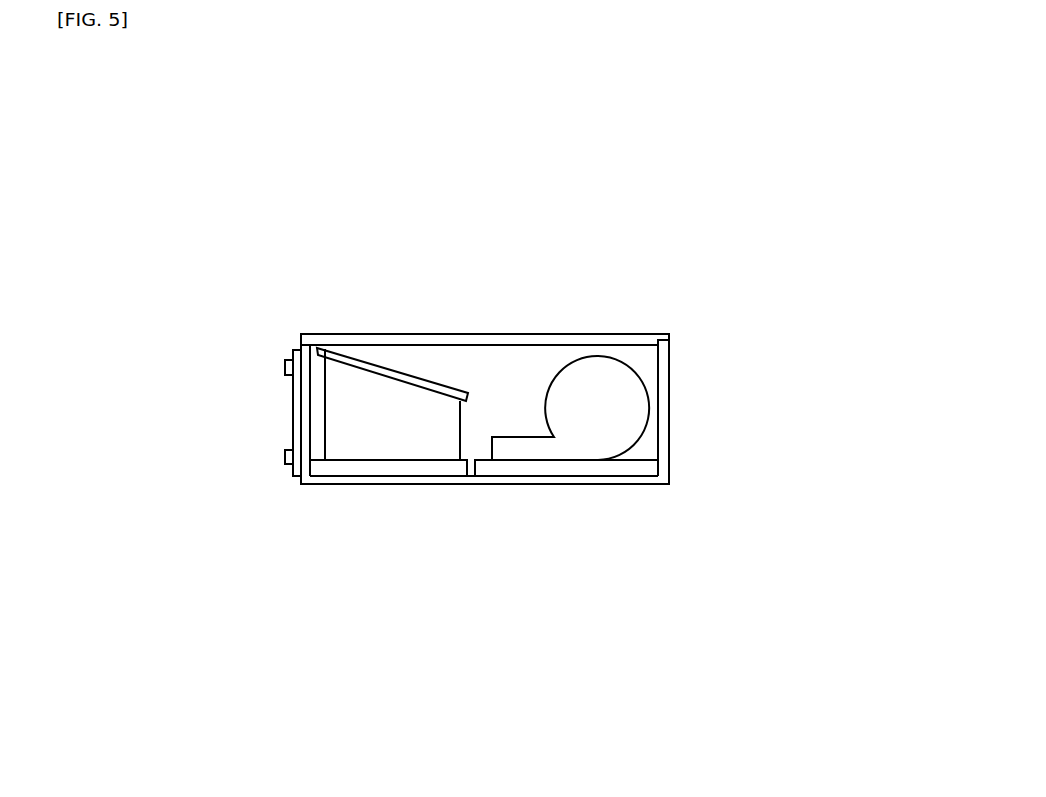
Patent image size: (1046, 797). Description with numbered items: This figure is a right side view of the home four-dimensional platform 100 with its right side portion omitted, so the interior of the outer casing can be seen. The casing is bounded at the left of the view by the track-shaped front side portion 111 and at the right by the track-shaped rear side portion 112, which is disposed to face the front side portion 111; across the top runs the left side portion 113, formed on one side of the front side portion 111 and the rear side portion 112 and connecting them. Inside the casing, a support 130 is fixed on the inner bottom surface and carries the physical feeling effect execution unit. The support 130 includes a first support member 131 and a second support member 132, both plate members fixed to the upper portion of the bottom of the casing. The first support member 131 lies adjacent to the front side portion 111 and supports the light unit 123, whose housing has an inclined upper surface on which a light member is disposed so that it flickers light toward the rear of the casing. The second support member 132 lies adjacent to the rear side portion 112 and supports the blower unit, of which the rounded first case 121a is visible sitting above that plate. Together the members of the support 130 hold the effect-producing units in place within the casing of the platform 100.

The home 4D platform 100 is at (130, 113).
The front side portion 111 is at (292, 417).
The rear side portion 112 is at (663, 374).
The left side portion 113 is at (507, 342).
The light unit 123 is at (387, 335).
The first case 121a is at (603, 380).
The support 130 is at (535, 650).
The first support member 131 is at (375, 468).
The second support member 132 is at (562, 467).